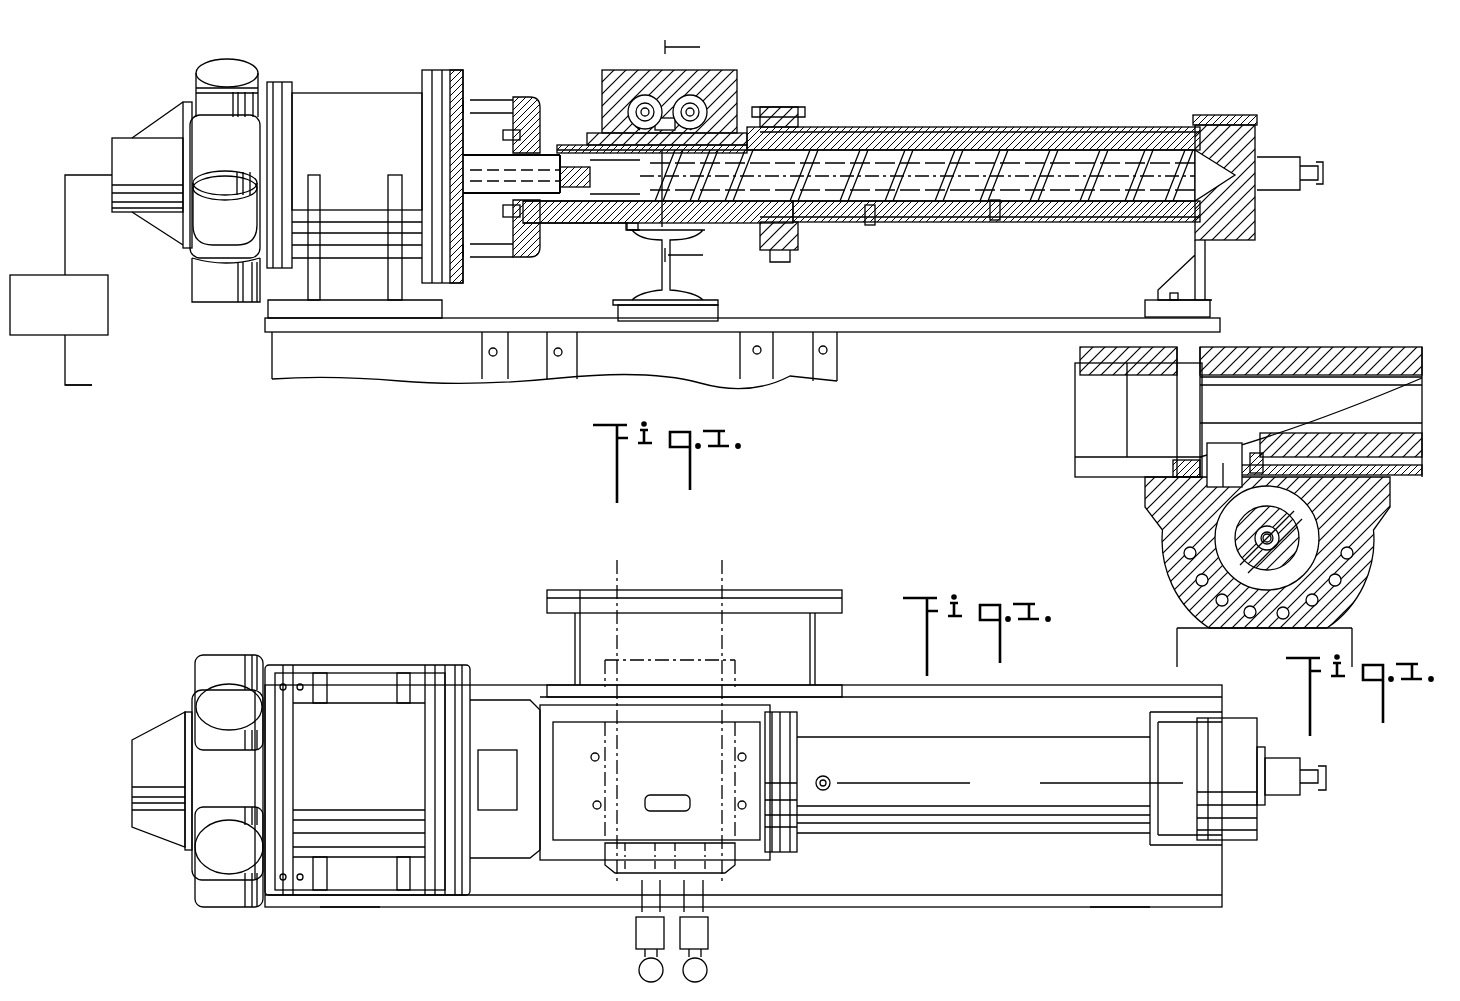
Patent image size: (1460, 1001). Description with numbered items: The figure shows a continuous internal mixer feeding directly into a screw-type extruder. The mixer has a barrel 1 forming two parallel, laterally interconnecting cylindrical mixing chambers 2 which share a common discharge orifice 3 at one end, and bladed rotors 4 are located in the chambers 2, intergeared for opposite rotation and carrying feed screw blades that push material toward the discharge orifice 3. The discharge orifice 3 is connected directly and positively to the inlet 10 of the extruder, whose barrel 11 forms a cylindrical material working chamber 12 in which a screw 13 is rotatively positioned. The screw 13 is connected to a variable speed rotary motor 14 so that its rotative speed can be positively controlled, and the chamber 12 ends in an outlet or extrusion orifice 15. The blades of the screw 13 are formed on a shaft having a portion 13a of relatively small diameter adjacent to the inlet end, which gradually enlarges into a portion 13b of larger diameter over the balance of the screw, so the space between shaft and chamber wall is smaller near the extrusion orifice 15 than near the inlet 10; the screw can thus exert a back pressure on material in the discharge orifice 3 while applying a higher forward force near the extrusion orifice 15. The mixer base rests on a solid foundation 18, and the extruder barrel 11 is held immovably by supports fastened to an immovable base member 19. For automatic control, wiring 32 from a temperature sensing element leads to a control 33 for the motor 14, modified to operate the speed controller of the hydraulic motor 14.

In FIG. 4, the barrel 1 is at (1350, 353).
In FIG. 2, the barrel 1 is at (617, 630).
In FIG. 1, the mixing chambers 2 is at (658, 82).
In FIG. 1, the discharge orifice 3 is at (691, 151).
In FIG. 4, the discharge orifice 3 is at (1215, 470).
In FIG. 1, the bladed rotors 4 is at (612, 114).
In FIG. 4, the bladed rotors 4 is at (1275, 393).
In FIG. 4, the inlet 10 is at (1200, 518).
In FIG. 2, the inlet 10 is at (678, 800).
In FIG. 1, the barrel 11 is at (897, 128).
In FIG. 4, the barrel 11 is at (1355, 580).
In FIG. 2, the barrel 11 is at (945, 810).
In FIG. 1, the material working chamber 12 is at (963, 150).
In FIG. 1, the screw 13 is at (760, 232).
In FIG. 4, the screw 13 is at (1290, 540).
In FIG. 1, the shaft portion of relatively small diameter 13a is at (636, 232).
In FIG. 1, the shaft portion of larger diameter 13b is at (1042, 205).
In FIG. 1, the variable speed rotary motor 14 is at (353, 102).
In FIG. 2, the variable speed rotary motor 14 is at (357, 712).
In FIG. 1, the extrusion orifice 15 is at (1265, 168).
In FIG. 1, the foundation 18 is at (1207, 267).
In FIG. 1, the base member 19 is at (887, 325).
In FIG. 2, the base member 19 is at (905, 890).
In FIG. 1, the wiring 32 is at (96, 380).
In FIG. 1, the control 33 is at (108, 318).